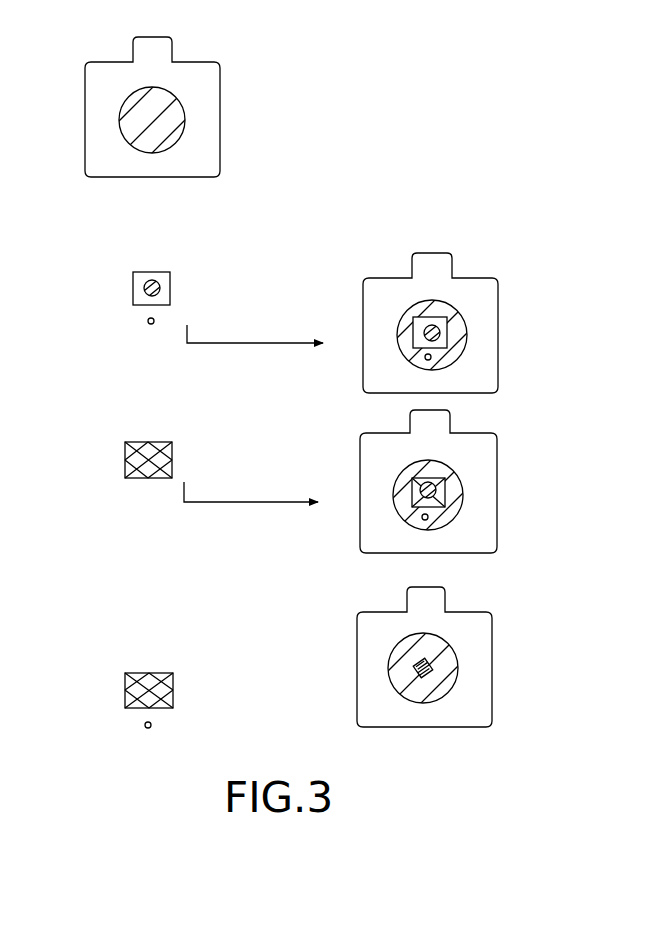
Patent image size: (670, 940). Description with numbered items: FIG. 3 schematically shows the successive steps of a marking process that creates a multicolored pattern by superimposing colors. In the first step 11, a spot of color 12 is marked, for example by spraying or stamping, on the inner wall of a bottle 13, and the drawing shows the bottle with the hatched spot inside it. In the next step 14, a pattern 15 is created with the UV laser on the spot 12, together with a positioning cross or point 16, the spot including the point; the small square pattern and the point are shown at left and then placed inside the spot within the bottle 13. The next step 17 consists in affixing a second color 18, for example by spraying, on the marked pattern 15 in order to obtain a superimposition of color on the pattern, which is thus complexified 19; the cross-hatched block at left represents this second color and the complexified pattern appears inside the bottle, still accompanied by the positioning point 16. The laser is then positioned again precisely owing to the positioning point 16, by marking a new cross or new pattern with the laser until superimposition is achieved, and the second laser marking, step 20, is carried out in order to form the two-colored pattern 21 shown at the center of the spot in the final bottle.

The first step 11 is at (232, 78).
The spot of color 12 is at (132, 128).
The bottle 13 is at (197, 140).
The next step 14 is at (513, 276).
The pattern 15 is at (176, 298).
The positioning cross or point 16 is at (149, 325).
The next step 17 is at (507, 460).
The second color 18 is at (172, 455).
The complexified pattern 19 is at (456, 468).
The second laser marking step 20 is at (505, 628).
The two-colored pattern 21 is at (452, 697).